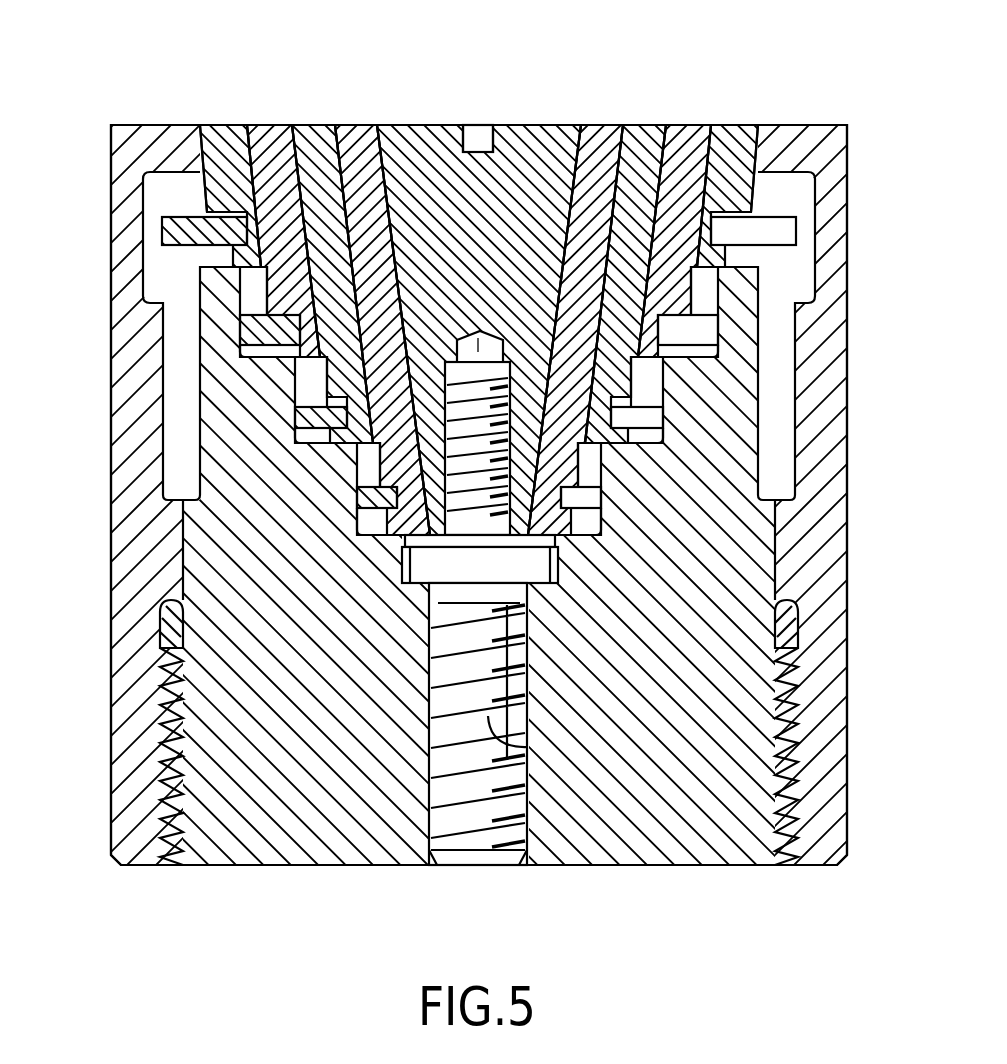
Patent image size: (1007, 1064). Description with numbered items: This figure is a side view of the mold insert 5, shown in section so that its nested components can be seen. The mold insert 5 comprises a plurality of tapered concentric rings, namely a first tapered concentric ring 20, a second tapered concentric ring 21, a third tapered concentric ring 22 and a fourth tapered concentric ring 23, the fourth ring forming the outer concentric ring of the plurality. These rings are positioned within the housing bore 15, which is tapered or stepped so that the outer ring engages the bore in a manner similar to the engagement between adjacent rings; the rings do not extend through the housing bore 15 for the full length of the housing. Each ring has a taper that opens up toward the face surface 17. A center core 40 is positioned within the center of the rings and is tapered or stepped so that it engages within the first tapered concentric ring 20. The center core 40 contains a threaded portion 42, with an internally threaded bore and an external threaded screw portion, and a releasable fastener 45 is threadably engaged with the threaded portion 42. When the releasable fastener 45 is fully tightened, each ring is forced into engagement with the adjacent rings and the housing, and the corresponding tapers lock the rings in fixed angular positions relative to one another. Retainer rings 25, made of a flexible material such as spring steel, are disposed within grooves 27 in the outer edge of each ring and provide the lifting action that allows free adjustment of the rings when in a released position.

The mold insert 5 is at (115, 45).
The housing bore 15 is at (242, 292).
The face surface 17 is at (355, 125).
The first tapered concentric ring 20 is at (356, 140).
The second tapered concentric ring 21 is at (320, 147).
The third tapered concentric ring 22 is at (274, 147).
The fourth tapered concentric ring 23 is at (224, 145).
The retainer rings 25 is at (175, 238).
The grooves 27 is at (230, 210).
The center core 40 is at (528, 728).
The threaded portion 42 is at (503, 383).
The releasable fastener 45 is at (533, 147).